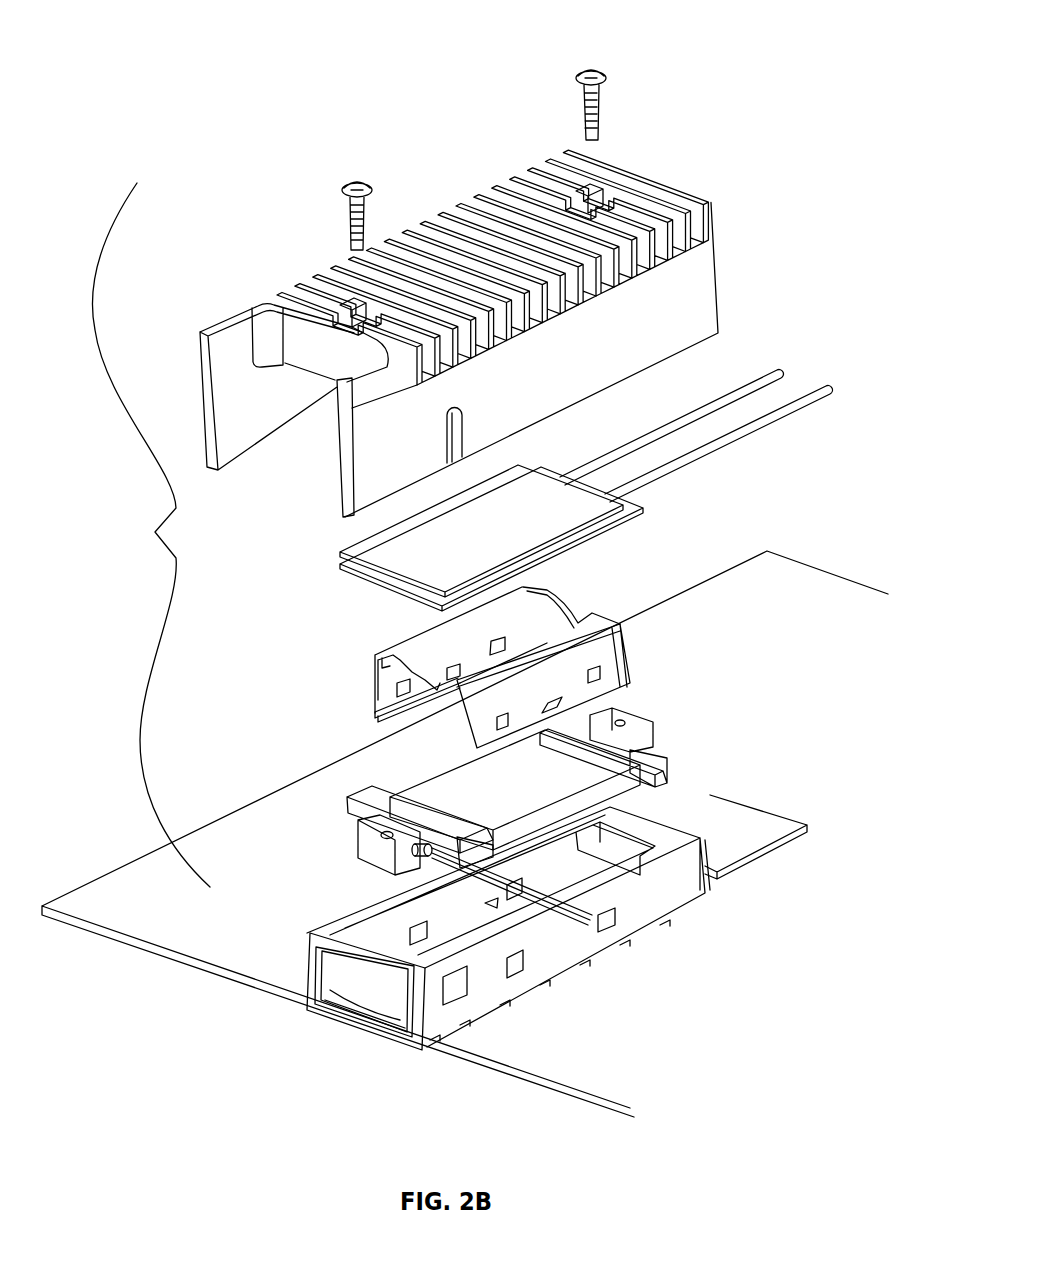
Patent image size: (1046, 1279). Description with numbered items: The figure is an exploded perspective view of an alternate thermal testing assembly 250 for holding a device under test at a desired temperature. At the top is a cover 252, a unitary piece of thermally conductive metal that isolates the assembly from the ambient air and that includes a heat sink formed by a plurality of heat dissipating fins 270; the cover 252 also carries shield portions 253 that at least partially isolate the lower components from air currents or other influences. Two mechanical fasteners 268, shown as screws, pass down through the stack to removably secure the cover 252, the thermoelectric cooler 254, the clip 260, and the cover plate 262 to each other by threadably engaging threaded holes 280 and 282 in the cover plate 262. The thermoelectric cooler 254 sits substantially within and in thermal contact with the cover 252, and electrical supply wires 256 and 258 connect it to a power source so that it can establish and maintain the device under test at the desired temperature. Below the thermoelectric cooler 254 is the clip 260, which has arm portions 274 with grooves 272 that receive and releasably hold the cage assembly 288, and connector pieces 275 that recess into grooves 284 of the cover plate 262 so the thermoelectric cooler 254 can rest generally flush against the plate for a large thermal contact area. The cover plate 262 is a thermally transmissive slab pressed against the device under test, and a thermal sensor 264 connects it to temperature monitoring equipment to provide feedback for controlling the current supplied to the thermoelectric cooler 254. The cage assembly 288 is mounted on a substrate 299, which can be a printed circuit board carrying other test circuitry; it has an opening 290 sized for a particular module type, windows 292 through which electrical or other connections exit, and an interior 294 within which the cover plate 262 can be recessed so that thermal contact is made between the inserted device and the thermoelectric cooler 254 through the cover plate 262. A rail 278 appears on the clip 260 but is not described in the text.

The thermal testing assembly 250 is at (151, 535).
The cover 252 is at (511, 333).
The shield portions 253 is at (712, 323).
The thermoelectric cooler (TEC) 254 is at (618, 524).
The electrical supply wire 256 is at (777, 368).
The electrical supply wire 258 is at (800, 408).
The clip 260 is at (510, 662).
The cover plate 262 is at (660, 763).
The thermal sensor 264 is at (420, 856).
The mechanical fasteners 268 is at (356, 182).
The heat dissipating fins 270 is at (708, 248).
The grooves 272 is at (633, 683).
The arm portions 274 is at (450, 661).
The connector pieces 275 is at (598, 612).
The gasket rail 278 is at (372, 714).
The threaded hole 280 is at (380, 832).
The threaded hole 282 is at (627, 723).
The grooves 284 is at (560, 828).
The cage assembly 288 is at (534, 945).
The opening 290 is at (393, 1020).
The windows 292 is at (470, 1000).
The interior 294 is at (497, 905).
The substrate 299 is at (681, 1057).